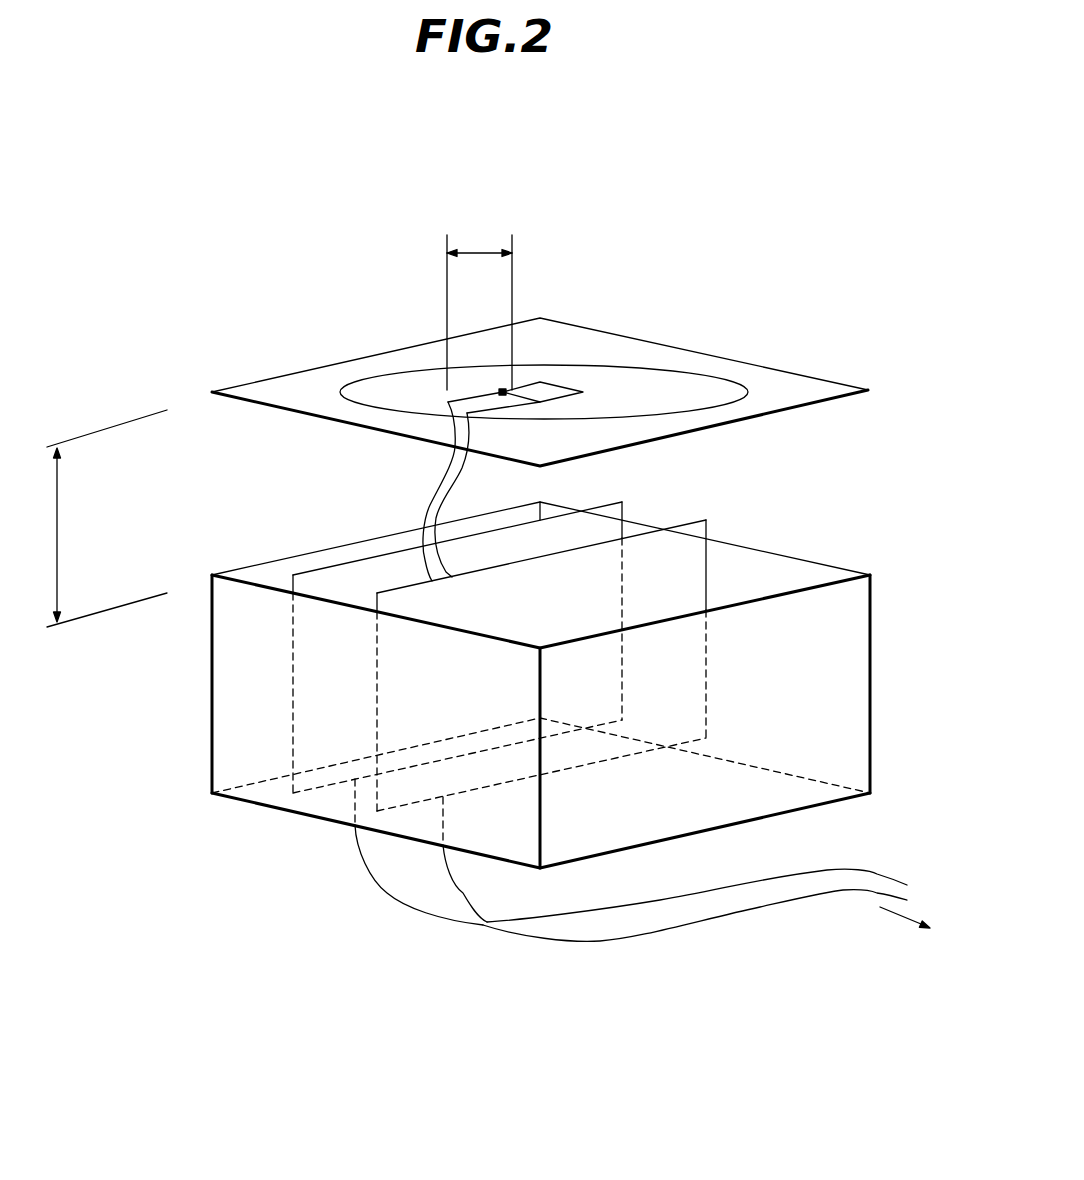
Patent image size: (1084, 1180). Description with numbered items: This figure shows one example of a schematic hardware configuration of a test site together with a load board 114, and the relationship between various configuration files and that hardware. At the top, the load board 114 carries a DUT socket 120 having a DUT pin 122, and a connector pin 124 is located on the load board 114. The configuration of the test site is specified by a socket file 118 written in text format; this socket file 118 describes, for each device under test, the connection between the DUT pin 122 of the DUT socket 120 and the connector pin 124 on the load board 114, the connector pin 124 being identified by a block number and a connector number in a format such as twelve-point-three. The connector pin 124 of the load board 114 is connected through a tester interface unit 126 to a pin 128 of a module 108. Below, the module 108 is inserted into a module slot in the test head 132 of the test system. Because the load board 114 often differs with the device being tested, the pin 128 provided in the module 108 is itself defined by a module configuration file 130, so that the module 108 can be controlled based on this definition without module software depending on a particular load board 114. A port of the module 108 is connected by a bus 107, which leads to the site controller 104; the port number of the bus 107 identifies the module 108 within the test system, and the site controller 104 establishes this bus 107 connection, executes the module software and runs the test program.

The site controller 104 is at (850, 937).
The bus 107 is at (588, 916).
The module 108 is at (613, 510).
The load board 114 is at (670, 346).
The socket file 118 is at (480, 251).
The DUT socket 120 is at (583, 392).
The DUT pin 122 is at (524, 376).
The connector pin 124 is at (425, 389).
The tester interface unit (TIU) 126 is at (440, 487).
The pin 128 is at (426, 591).
The module configuration file (MCF) 130 is at (198, 518).
The test head 132 is at (683, 833).